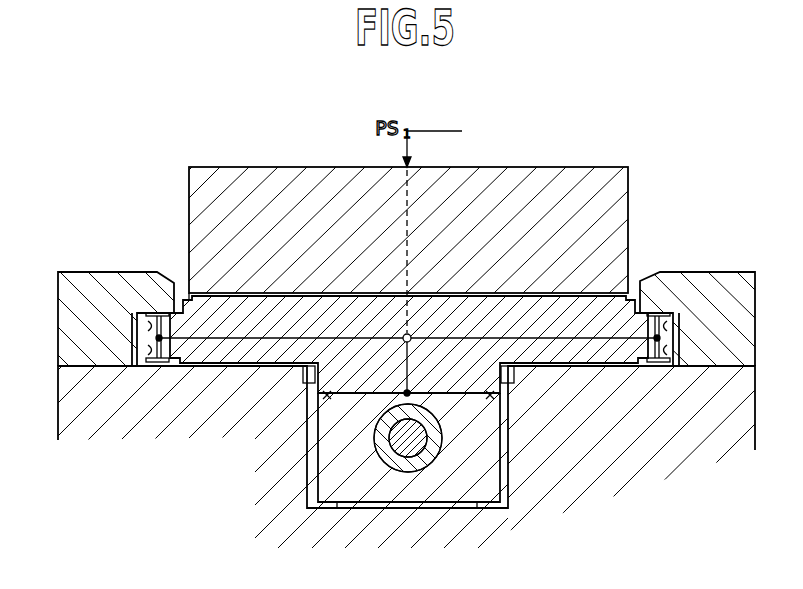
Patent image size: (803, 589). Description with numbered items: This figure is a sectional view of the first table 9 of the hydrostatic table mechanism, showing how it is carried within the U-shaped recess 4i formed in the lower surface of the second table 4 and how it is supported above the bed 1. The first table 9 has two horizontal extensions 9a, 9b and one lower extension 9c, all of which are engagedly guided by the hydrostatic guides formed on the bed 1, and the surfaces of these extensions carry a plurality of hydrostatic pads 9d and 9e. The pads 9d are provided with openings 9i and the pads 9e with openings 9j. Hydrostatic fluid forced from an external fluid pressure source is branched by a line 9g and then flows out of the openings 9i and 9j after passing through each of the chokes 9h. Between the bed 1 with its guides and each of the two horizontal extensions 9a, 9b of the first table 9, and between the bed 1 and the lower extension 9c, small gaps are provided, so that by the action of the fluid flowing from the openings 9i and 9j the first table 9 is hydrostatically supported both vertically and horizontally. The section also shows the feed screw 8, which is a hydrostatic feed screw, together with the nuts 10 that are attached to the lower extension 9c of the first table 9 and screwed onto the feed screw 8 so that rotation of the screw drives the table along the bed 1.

The bed 1 is at (728, 423).
The second table 4 is at (350, 183).
The U-shaped recess 4i is at (211, 296).
The feed screw 8 is at (415, 450).
The first table 9 is at (333, 315).
The horizontal extension 9a is at (668, 330).
The horizontal extension 9b is at (132, 311).
The lower extension 9c is at (490, 485).
The hydrostatic pad 9d is at (153, 312).
The hydrostatic pad 9e is at (311, 403).
The line 9g is at (414, 296).
The choke 9h is at (150, 348).
The opening 9i is at (163, 313).
The opening 9j is at (510, 393).
The nut 10 is at (398, 462).